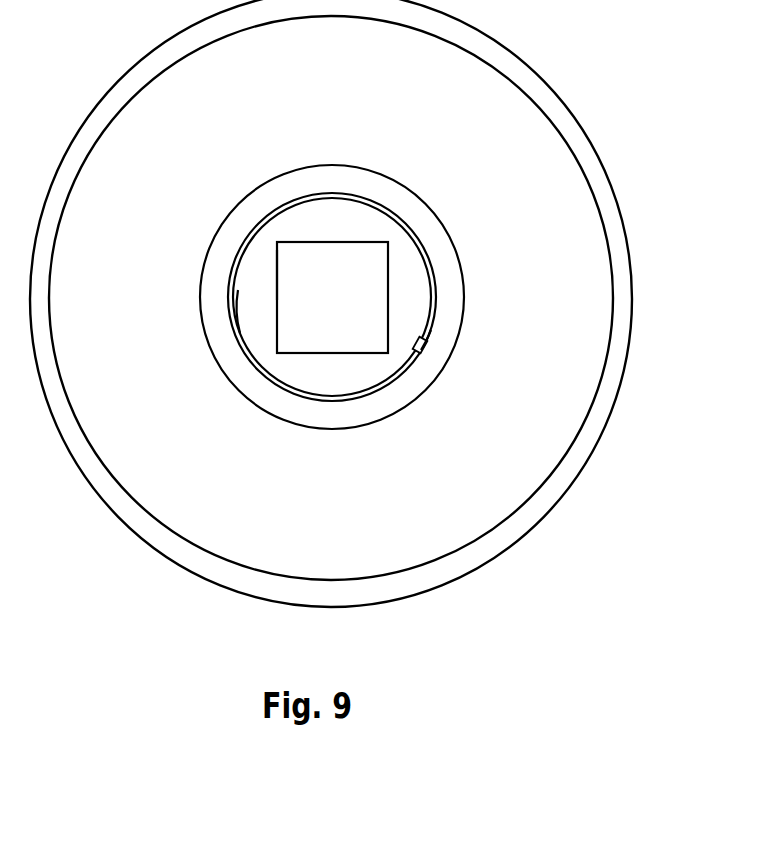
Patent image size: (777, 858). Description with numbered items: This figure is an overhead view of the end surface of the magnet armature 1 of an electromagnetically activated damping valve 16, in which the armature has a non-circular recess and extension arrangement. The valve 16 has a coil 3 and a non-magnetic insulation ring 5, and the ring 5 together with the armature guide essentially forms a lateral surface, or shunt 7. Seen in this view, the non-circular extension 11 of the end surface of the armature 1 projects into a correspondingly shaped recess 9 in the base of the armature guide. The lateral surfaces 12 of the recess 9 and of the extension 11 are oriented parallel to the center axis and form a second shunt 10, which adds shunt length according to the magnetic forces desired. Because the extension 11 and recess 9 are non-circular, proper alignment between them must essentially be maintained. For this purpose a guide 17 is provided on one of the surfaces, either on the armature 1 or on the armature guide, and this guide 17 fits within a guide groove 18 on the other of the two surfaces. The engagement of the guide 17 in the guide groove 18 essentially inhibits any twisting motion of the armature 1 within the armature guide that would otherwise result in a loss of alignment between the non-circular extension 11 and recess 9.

The magnet armature 1 is at (375, 231).
The coil 3 is at (558, 222).
The non-magnetic insulation ring 5 is at (457, 279).
The shunt 7 is at (437, 308).
The recess 9 is at (387, 353).
The second shunt 10 is at (277, 273).
The extension 11 is at (255, 318).
The lateral surfaces 12 is at (280, 370).
The electromagnetically activated damping valve 16 is at (103, 65).
The guide 17 is at (428, 338).
The guide groove 18 is at (427, 350).